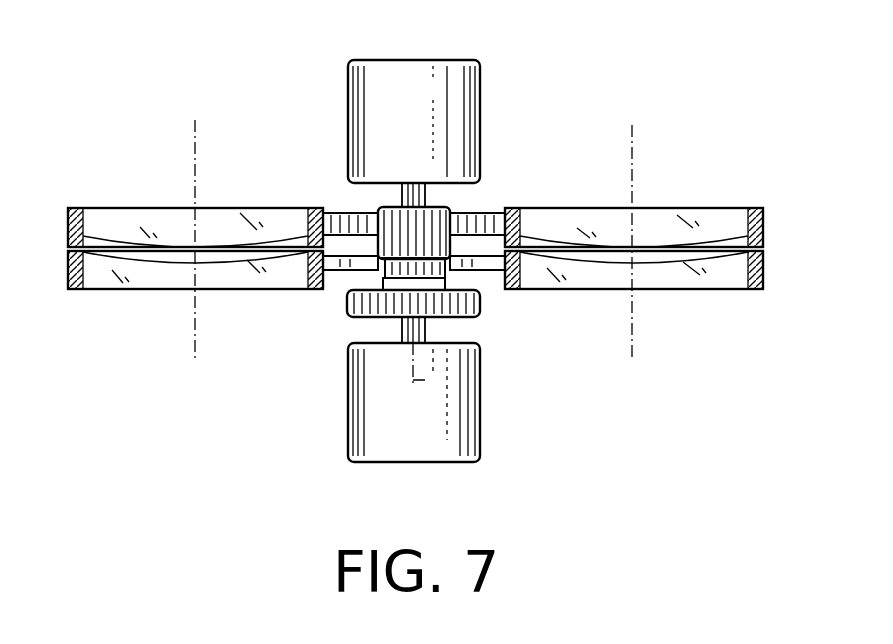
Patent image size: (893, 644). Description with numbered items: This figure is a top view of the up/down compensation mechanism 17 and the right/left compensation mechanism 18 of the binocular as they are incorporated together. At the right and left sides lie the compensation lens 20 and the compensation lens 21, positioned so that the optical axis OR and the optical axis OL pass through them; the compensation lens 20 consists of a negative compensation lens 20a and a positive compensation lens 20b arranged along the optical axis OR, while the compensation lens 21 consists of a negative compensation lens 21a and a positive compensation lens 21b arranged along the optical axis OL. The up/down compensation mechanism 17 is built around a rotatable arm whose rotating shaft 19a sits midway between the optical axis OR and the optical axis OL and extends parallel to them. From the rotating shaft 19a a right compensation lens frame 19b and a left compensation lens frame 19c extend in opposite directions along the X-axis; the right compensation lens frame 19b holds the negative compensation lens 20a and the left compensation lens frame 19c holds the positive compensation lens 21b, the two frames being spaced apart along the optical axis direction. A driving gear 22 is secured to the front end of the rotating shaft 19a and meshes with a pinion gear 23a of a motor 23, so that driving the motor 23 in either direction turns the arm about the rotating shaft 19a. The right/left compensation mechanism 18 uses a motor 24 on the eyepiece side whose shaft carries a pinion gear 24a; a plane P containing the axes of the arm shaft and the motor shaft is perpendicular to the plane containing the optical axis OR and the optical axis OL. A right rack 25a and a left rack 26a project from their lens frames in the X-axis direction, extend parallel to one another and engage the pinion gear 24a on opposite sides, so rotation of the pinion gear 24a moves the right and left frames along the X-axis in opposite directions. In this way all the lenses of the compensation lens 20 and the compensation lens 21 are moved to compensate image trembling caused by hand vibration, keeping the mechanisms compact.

The up/down compensation mechanism 17 is at (146, 341).
The right/left compensation mechanism 18 is at (699, 124).
The rotating shaft 19a is at (455, 243).
The right compensation lens frame 19b is at (348, 271).
The left compensation lens frame 19c is at (500, 212).
The compensation lens 20 is at (187, 162).
The negative compensation lens 20a is at (152, 275).
The positive compensation lens 20b is at (105, 228).
The compensation lens 21 is at (778, 340).
The negative compensation lens 21a is at (717, 268).
The positive compensation lens 21b is at (682, 248).
The driving gear 22 is at (362, 320).
The motor 23 is at (363, 425).
The pinion gear 23a is at (450, 320).
The motor 24 is at (412, 82).
The pinion gear 24a is at (356, 237).
The right rack 25a is at (342, 214).
The left rack 26a is at (483, 268).
The plane P is at (427, 380).
The optical axis OR is at (197, 222).
The optical axis OL is at (630, 223).